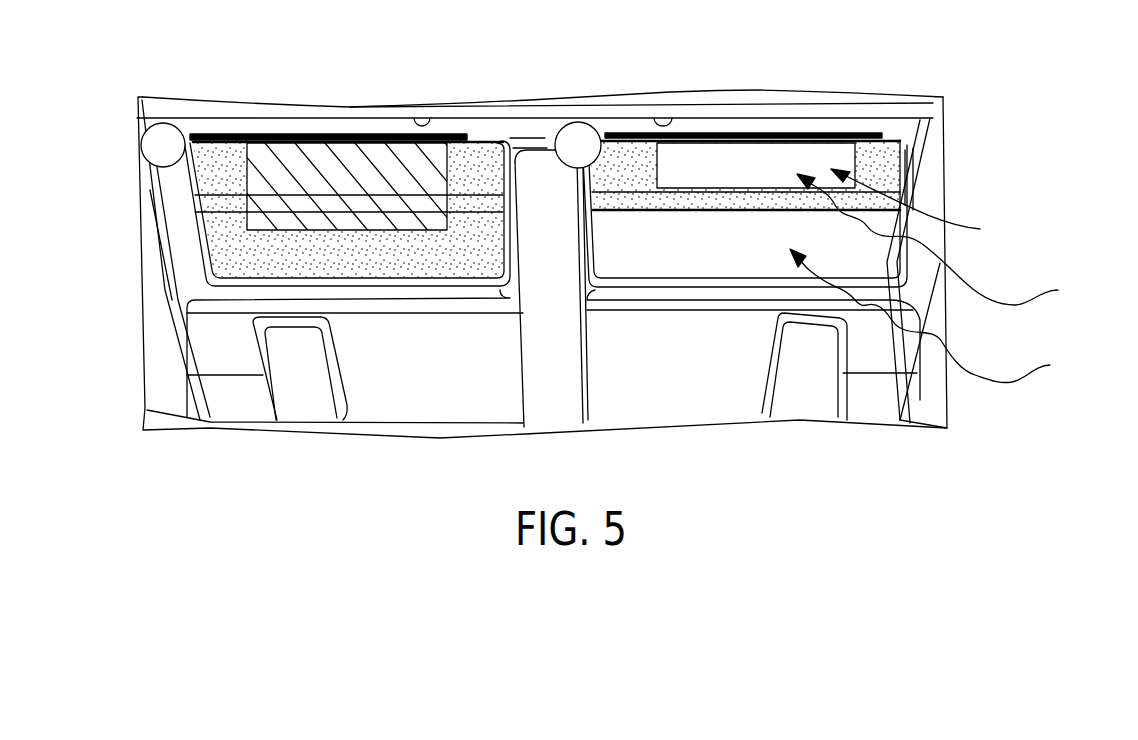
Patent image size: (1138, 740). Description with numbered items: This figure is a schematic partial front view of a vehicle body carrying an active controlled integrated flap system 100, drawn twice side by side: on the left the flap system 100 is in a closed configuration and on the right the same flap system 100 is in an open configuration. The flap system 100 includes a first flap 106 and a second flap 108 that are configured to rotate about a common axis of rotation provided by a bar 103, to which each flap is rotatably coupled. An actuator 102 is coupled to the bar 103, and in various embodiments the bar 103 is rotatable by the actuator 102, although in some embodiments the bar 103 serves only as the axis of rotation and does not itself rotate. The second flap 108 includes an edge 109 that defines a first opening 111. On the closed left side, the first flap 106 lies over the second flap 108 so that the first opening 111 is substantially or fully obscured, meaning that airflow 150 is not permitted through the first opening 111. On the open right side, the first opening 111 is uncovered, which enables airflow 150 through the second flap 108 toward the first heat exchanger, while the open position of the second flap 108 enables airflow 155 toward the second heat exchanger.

The flap system 100 is at (116, 124).
The actuator 102 is at (182, 128).
The bar 103 is at (363, 133).
The first flap 106 is at (268, 218).
The second flap 108 is at (217, 197).
The edge 109 is at (873, 150).
The first opening 111 is at (923, 207).
The airflow 150 is at (946, 239).
The airflow 155 is at (937, 316).